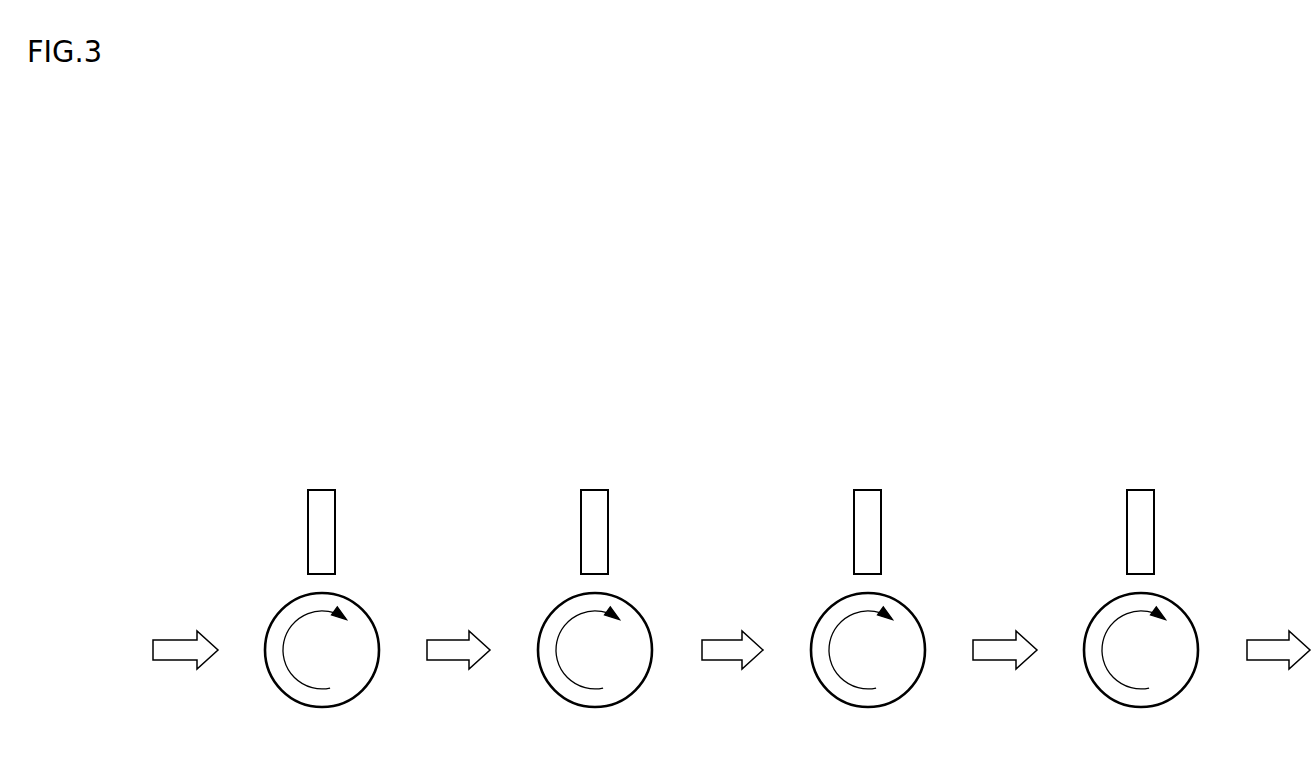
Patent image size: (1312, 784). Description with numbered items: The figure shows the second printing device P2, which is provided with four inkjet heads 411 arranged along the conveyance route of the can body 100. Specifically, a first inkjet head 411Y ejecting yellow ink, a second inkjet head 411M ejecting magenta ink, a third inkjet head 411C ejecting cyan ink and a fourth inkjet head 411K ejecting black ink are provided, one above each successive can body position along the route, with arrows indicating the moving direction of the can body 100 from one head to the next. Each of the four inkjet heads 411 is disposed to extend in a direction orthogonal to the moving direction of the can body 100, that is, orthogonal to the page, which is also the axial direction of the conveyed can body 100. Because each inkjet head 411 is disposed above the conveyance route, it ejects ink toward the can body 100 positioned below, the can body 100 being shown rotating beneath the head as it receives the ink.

The second printing device P2 is at (699, 226).
The inkjet head 411 is at (764, 465).
The first inkjet head 411Y is at (320, 489).
The second inkjet head 411M is at (593, 489).
The third inkjet head 411C is at (866, 489).
The fourth inkjet head 411K is at (1139, 489).
The can body 100 is at (353, 598).